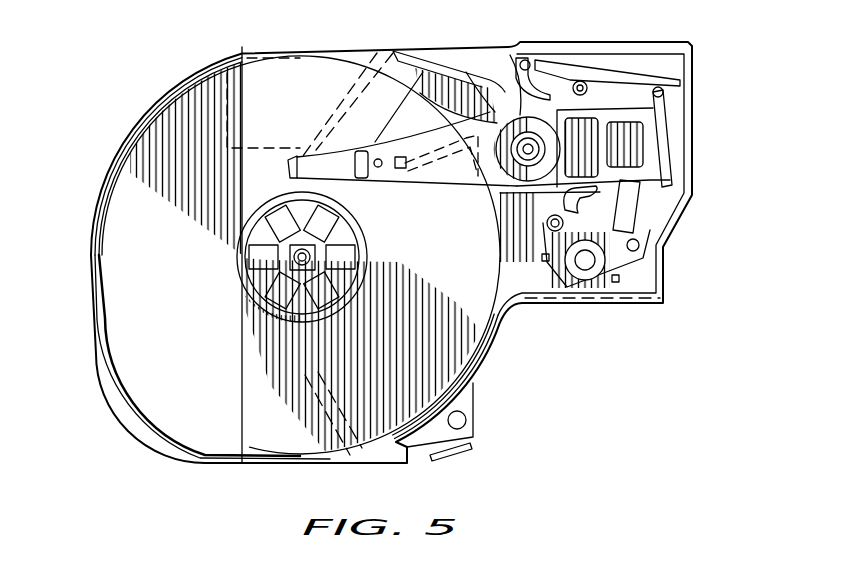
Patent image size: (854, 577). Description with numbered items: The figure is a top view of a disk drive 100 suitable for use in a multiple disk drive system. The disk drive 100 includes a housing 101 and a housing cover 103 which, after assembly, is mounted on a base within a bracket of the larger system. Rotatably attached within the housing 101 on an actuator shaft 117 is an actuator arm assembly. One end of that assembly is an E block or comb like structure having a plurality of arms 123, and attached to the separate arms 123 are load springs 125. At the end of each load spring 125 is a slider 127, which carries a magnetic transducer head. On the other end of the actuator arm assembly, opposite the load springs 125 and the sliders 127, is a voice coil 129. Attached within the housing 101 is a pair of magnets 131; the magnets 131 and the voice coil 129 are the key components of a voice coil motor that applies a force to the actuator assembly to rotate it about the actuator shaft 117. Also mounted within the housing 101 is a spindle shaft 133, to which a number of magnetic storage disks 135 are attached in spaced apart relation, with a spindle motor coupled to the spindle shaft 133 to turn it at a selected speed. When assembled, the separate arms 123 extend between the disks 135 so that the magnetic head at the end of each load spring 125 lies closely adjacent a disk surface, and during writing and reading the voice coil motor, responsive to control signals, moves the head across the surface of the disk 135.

The disk drive 100 is at (548, 394).
The housing 101 is at (617, 42).
The housing cover 103 is at (273, 465).
The actuator shaft 117 is at (512, 82).
The arms 123 is at (466, 72).
The load springs 125 is at (342, 158).
The slider 127 is at (290, 160).
The voice coil 129 is at (640, 133).
The pair of magnets 131 is at (650, 208).
The spindle shaft 133 is at (300, 257).
The magnetic storage disks 135 is at (126, 221).